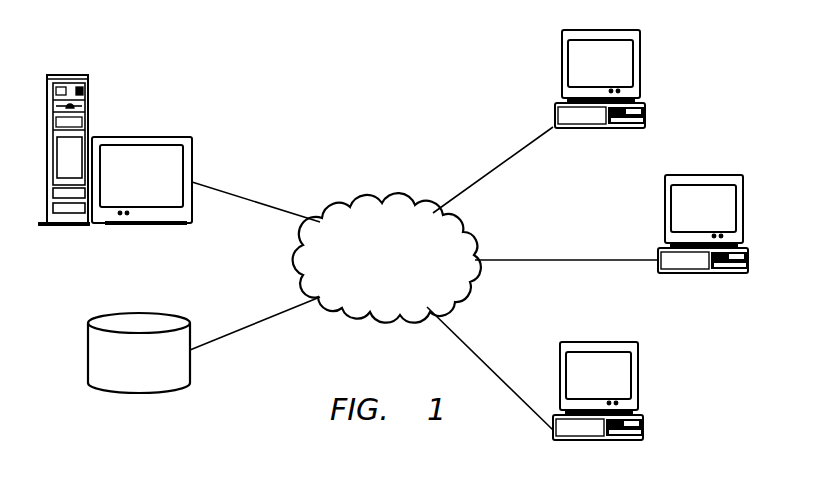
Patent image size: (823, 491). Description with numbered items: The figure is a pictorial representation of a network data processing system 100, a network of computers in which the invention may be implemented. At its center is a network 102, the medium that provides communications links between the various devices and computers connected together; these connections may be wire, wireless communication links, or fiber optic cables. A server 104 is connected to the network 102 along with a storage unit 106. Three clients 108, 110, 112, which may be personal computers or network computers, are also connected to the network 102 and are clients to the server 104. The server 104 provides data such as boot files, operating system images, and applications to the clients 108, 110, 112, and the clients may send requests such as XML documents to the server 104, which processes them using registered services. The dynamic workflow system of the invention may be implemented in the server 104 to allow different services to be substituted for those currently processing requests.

The network data processing system 100 is at (272, 65).
The network 102 is at (369, 284).
The server 104 is at (88, 96).
The storage unit 106 is at (88, 353).
The client 108 is at (640, 70).
The client 110 is at (743, 213).
The client 112 is at (638, 380).